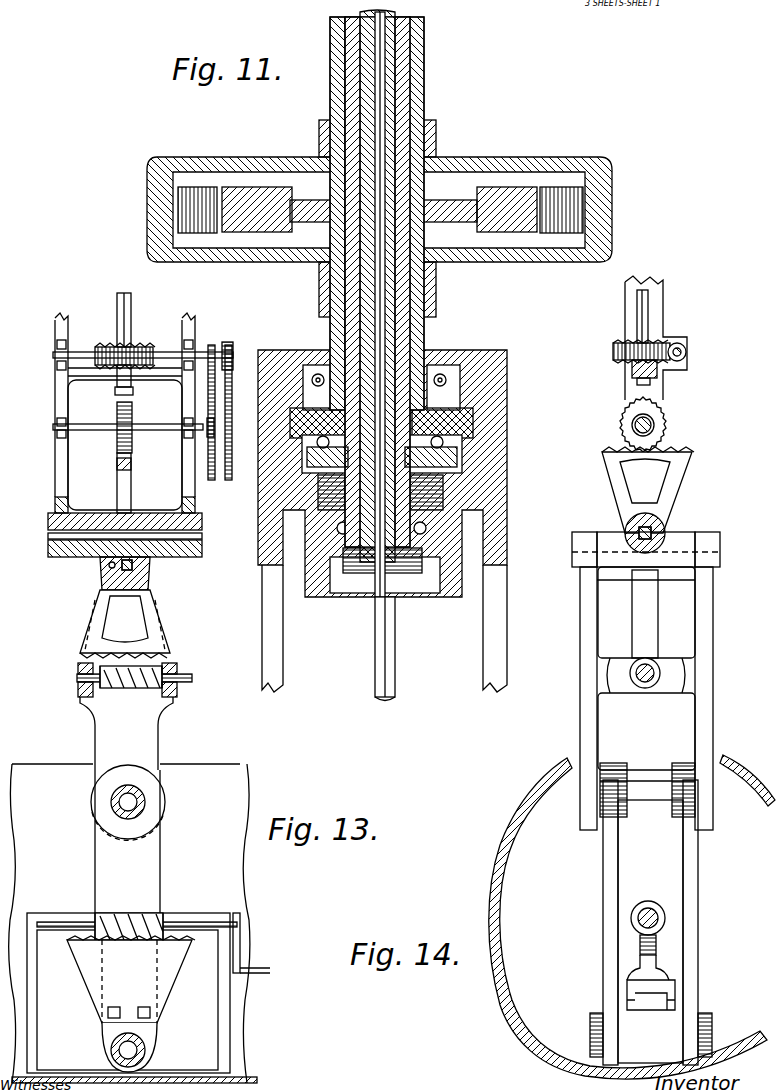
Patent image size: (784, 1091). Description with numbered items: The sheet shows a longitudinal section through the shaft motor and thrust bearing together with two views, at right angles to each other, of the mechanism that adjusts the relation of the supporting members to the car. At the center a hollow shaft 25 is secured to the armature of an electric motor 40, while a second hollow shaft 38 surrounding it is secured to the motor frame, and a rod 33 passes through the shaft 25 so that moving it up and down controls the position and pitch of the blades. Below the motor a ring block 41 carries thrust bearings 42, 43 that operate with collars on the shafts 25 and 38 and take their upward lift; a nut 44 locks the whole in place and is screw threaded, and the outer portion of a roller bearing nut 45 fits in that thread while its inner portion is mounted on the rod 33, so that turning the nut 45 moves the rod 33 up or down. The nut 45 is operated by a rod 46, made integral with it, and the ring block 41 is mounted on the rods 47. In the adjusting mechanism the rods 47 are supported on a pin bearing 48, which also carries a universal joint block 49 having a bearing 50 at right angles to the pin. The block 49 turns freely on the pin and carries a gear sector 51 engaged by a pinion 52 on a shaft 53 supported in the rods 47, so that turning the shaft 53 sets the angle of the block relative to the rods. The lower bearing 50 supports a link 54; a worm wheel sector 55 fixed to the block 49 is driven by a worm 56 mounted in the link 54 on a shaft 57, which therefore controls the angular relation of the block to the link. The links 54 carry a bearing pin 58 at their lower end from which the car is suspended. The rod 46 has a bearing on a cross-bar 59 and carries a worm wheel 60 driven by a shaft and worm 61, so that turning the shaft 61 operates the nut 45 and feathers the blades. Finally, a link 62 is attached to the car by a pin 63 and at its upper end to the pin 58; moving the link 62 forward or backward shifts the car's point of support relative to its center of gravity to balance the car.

In FIG. 11, the shaft 25 is at (406, 46).
In FIG. 11, the rod 33 is at (400, 12).
In FIG. 11, the hollow shaft 38 is at (421, 86).
In FIG. 11, the electric motor 40 is at (207, 158).
In FIG. 11, the ring block 41 is at (490, 351).
In FIG. 11, the thrust bearing 42 is at (446, 378).
In FIG. 11, the thrust bearing 43 is at (470, 425).
In FIG. 11, the nut 44 is at (475, 492).
In FIG. 11, the roller bearing nut 45 is at (455, 532).
In FIG. 11, the rod 46 is at (394, 638).
In FIG. 13, the rod 46 is at (132, 306).
In FIG. 11, the rods 47 is at (281, 662).
In FIG. 13, the rods 47 is at (56, 328).
In FIG. 14, the rods 47 is at (661, 311).
In FIG. 13, the pin bearing 48 is at (50, 540).
In FIG. 13, the universal joint block 49 is at (90, 513).
In FIG. 14, the universal joint block 49 is at (680, 540).
In FIG. 13, the bearing 50 is at (100, 567).
In FIG. 13, the gear sector 51 is at (118, 480).
In FIG. 14, the gear sector 51 is at (681, 481).
In FIG. 13, the pinion 52 is at (117, 406).
In FIG. 14, the pinion 52 is at (666, 437).
In FIG. 13, the shaft 53 is at (214, 440).
In FIG. 14, the shaft 53 is at (655, 424).
In FIG. 13, the link 54 is at (152, 740).
In FIG. 14, the link 54 is at (582, 680).
In FIG. 13, the worm wheel sector 55 is at (151, 616).
In FIG. 14, the worm wheel sector 55 is at (652, 616).
In FIG. 13, the worm 56 is at (79, 689).
In FIG. 13, the shaft 57 is at (190, 670).
In FIG. 14, the shaft 57 is at (645, 690).
In FIG. 13, the bearing pin 58 is at (118, 806).
In FIG. 14, the bearing pin 58 is at (641, 782).
In FIG. 13, the cross-bar 59 is at (156, 381).
In FIG. 13, the worm wheel 60 is at (135, 347).
In FIG. 14, the worm wheel 60 is at (613, 352).
In FIG. 13, the shaft and worm 61 is at (217, 354).
In FIG. 14, the shaft and worm 61 is at (687, 352).
In FIG. 13, the link 62 is at (150, 866).
In FIG. 14, the link 62 is at (690, 887).
In FIG. 13, the pin 63 is at (112, 1050).
In FIG. 14, the pin 63 is at (672, 1028).